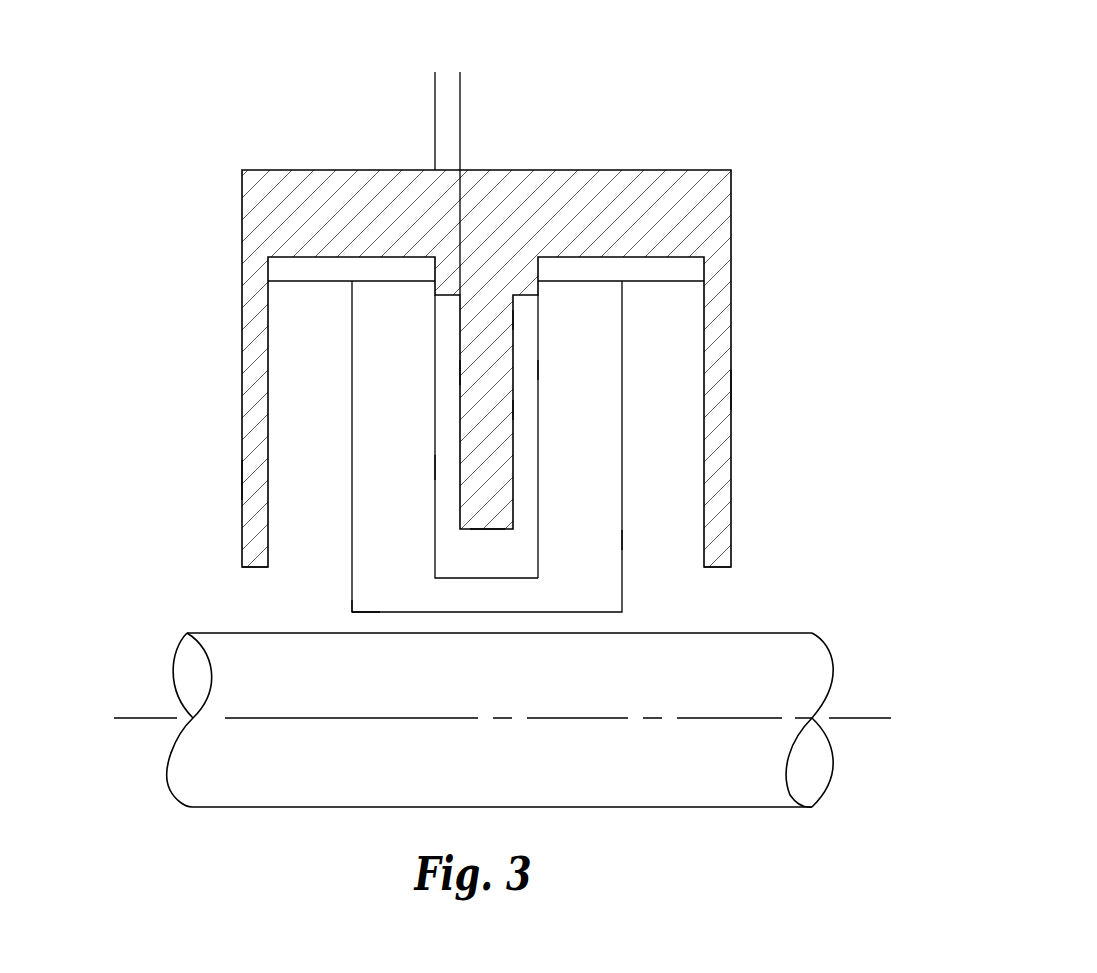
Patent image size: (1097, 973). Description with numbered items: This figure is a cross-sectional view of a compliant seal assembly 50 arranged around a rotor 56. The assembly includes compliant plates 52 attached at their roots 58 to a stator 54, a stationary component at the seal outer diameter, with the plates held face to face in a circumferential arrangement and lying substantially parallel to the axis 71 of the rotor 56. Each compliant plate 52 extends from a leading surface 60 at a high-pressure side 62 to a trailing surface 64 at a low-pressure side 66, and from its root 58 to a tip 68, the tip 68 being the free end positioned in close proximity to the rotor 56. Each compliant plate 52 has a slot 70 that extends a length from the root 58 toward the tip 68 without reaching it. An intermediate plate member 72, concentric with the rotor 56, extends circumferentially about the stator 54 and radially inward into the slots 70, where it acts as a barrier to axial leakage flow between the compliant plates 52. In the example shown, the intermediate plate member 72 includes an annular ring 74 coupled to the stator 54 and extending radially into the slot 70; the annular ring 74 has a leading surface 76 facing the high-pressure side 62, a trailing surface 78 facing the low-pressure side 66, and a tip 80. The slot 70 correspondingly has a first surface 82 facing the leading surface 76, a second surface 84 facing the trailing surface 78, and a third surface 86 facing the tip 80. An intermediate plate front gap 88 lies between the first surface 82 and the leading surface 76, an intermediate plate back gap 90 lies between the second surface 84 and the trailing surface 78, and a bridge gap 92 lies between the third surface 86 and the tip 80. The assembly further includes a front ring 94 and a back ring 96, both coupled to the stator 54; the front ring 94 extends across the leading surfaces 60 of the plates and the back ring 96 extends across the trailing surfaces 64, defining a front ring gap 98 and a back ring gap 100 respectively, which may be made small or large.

The compliant seal assembly 50 is at (718, 109).
The compliant plates 52 is at (575, 300).
The stator 54 is at (598, 257).
The rotor 56 is at (186, 783).
The root 58 is at (385, 280).
The leading surface 60 is at (352, 302).
The high-pressure side 62 is at (248, 585).
The trailing surface 64 is at (607, 542).
The low-pressure side 66 is at (723, 586).
The tip 68 is at (363, 612).
The slot 70 is at (475, 560).
The axis 71 is at (130, 718).
The intermediate plate member 72 is at (510, 320).
The annular ring 74 is at (477, 439).
The leading surface 76 is at (460, 372).
The trailing surface 78 is at (513, 410).
The tip 80 is at (487, 531).
The first surface 82 is at (447, 467).
The second surface 84 is at (533, 372).
The third surface 86 is at (513, 577).
The intermediate plate front gap 88 is at (393, 97).
The intermediate plate back gap 90 is at (513, 473).
The bridge gap 92 is at (305, 529).
The front ring 94 is at (250, 478).
The back ring 96 is at (715, 392).
The front ring gap 98 is at (352, 398).
The back ring gap 100 is at (622, 452).